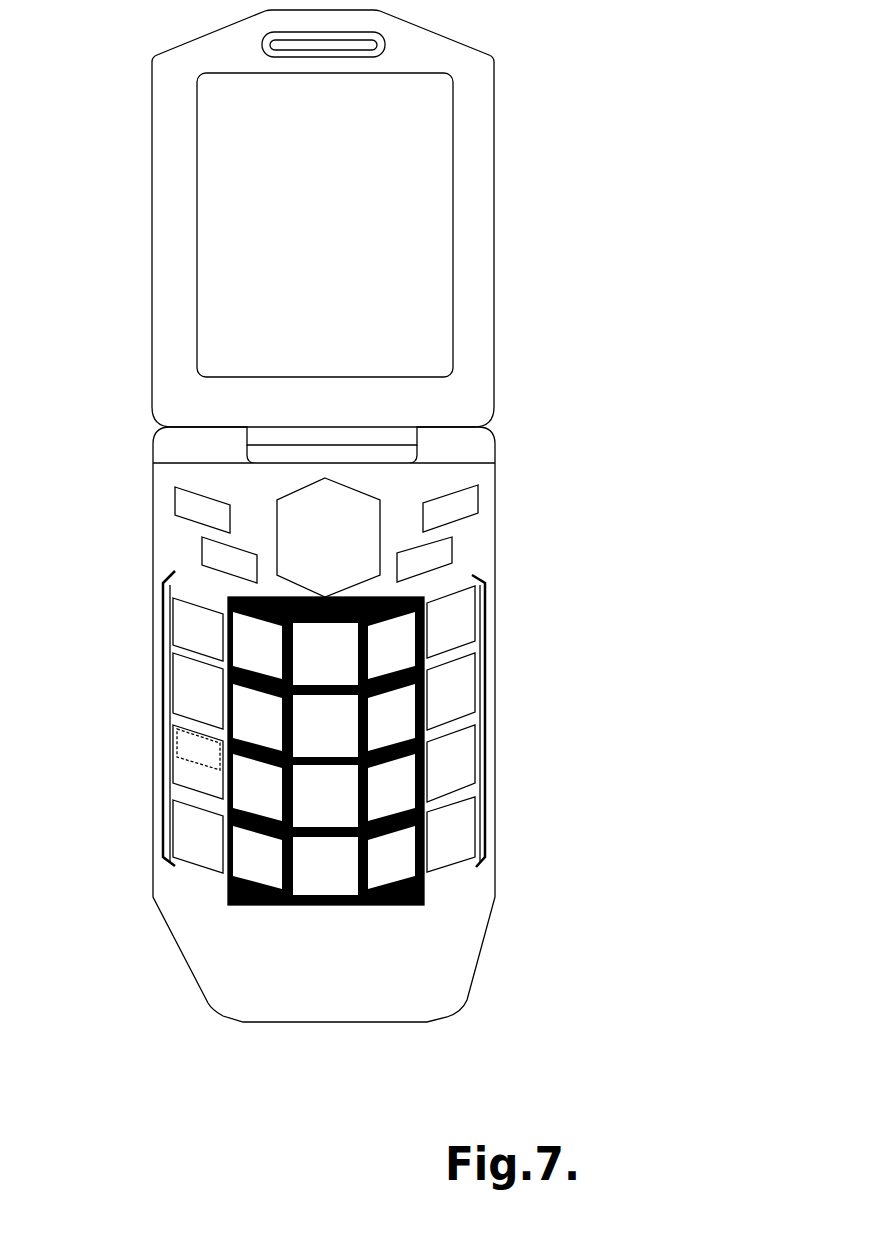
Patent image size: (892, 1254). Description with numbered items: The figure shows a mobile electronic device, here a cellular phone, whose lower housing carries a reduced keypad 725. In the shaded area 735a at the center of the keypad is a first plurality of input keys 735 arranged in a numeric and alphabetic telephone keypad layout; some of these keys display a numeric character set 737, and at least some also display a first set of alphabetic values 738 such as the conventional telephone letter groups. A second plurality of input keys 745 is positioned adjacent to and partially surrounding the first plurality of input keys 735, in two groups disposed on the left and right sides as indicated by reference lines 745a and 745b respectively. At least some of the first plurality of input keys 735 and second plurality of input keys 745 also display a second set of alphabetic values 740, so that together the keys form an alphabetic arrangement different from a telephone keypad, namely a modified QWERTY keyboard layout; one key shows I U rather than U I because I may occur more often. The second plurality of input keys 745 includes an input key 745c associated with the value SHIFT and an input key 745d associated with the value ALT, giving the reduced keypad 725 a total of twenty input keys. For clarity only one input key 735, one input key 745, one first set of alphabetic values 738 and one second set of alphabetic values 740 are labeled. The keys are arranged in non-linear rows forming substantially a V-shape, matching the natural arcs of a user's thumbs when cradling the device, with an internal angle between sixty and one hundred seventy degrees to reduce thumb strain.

The reduced keypad 725 is at (473, 563).
The first plurality of input keys 735 is at (289, 713).
The shaded area 735a is at (382, 905).
The numeric character set 737 is at (257, 667).
The first set of alphabetic values 738 is at (278, 600).
The second set of alphabetic values 740 is at (197, 763).
The second plurality of input keys 745 is at (448, 624).
The reference line for left group of second input keys 745a is at (137, 789).
The reference line for right group of second input keys 745b is at (515, 723).
The input key associated with SHIFT 745c is at (208, 853).
The input key associated with ALT 745d is at (460, 833).